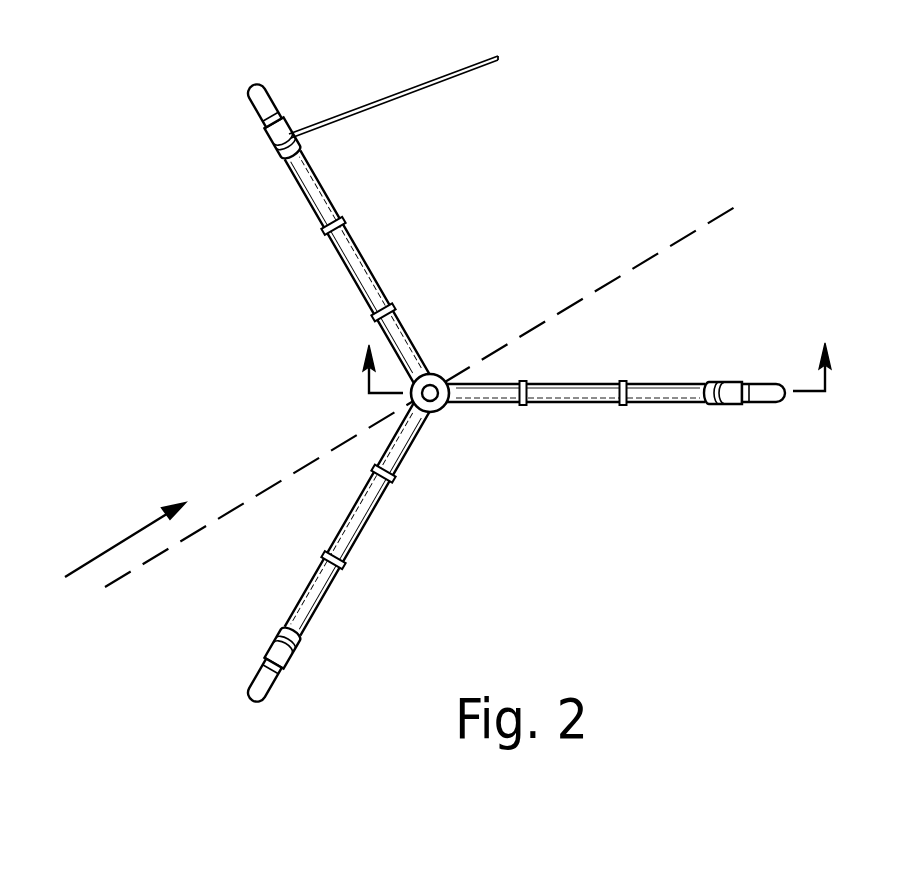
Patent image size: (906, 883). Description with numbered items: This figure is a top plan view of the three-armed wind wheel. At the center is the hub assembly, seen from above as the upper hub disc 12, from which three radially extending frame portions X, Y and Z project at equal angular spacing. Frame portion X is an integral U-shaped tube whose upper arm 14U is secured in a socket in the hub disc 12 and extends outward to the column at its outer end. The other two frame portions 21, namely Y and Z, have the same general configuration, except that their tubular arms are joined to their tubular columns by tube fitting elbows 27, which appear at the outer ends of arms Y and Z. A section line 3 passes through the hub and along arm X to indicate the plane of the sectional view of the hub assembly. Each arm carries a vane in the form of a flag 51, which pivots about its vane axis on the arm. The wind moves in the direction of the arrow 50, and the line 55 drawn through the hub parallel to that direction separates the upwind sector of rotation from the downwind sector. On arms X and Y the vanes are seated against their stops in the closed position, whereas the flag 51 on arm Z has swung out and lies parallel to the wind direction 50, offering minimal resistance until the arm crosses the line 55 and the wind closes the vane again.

The hub disc 12 is at (435, 377).
The upper arm 14U is at (598, 382).
The arm frame portion 21 is at (297, 202).
The tube fitting elbow 27 is at (246, 96).
The flag 51 is at (478, 62).
The line 55 is at (257, 495).
The wind direction arrow 50 is at (77, 572).
The section line 3- 3 is at (595, 367).
The frame portion X is at (712, 410).
The frame portion Y is at (287, 685).
The frame portion Z is at (304, 97).